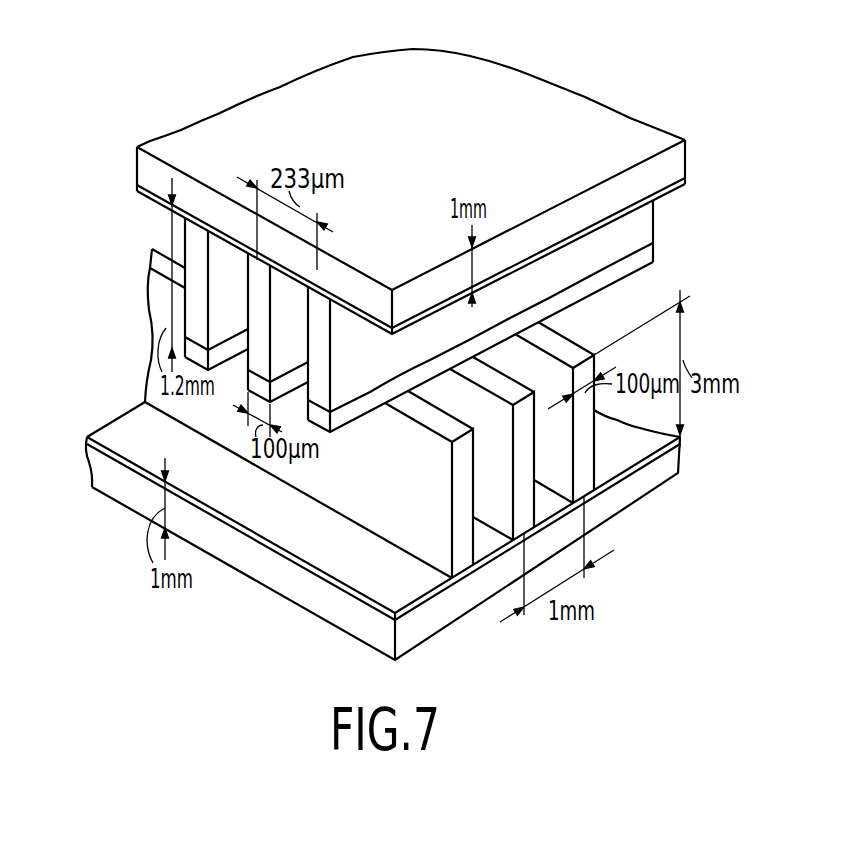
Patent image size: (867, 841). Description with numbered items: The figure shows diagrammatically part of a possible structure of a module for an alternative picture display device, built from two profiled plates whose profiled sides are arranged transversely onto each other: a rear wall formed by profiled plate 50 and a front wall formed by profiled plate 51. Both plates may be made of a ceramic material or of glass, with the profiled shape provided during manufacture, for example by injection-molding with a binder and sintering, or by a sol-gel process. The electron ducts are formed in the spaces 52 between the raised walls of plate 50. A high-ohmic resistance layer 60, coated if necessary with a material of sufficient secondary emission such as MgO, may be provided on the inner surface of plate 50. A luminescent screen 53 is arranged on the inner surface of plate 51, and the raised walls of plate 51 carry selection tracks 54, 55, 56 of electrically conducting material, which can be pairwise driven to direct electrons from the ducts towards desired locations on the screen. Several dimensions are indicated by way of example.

The profiled plate (rear wall) 50 is at (130, 467).
The profiled plate (front wall) 51 is at (300, 112).
The spaces (electron ducts) 52 is at (500, 453).
The luminescent screen 53 is at (687, 180).
The selection track 54 is at (330, 440).
The selection track 55 is at (247, 388).
The selection track 56 is at (203, 345).
The high-ohmic resistance layer 60 is at (333, 590).